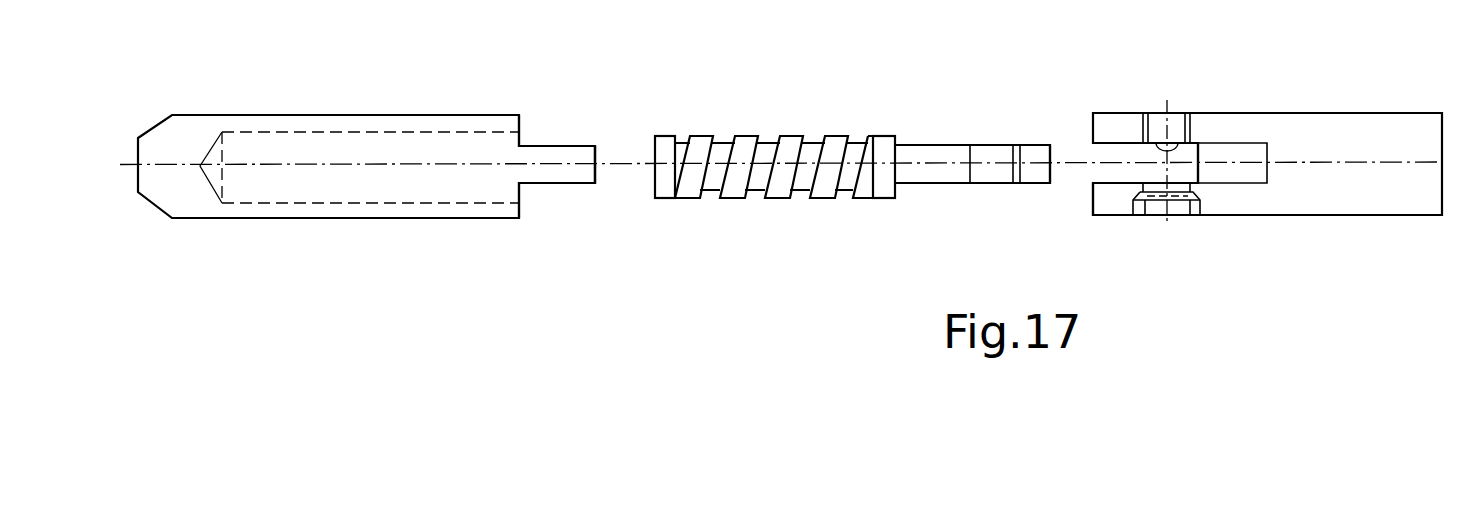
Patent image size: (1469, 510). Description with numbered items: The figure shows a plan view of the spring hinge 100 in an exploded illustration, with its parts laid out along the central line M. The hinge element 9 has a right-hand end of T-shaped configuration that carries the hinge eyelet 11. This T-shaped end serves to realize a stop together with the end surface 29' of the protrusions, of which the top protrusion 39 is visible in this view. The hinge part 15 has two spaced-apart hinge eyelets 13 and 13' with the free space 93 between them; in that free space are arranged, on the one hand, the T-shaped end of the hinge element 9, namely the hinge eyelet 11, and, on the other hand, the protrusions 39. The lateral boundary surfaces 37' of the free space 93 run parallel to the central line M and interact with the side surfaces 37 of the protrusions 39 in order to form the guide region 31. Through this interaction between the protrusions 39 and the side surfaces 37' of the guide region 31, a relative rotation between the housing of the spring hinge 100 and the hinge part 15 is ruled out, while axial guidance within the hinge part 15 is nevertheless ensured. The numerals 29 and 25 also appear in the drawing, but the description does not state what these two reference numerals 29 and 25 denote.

The spring hinge 100 is at (226, 90).
The central line M is at (320, 0).
The shoulder of body 29 is at (499, 116).
The side surfaces 37 is at (594, 188).
The protrusion 39 is at (552, 163).
The end surface 29' is at (659, 229).
The hinge element 9 is at (869, 0).
The hinge eyelet 11 is at (993, 145).
The guide region 31 is at (1084, 156).
The hinge part 15 is at (1321, 110).
The free space 93 is at (1127, 154).
The hinge eyelet 13 is at (1267, 243).
The hinge eyelet 13' is at (1195, 115).
The lateral boundary surfaces 37' is at (1218, 189).
The element 25 is at (792, 8).